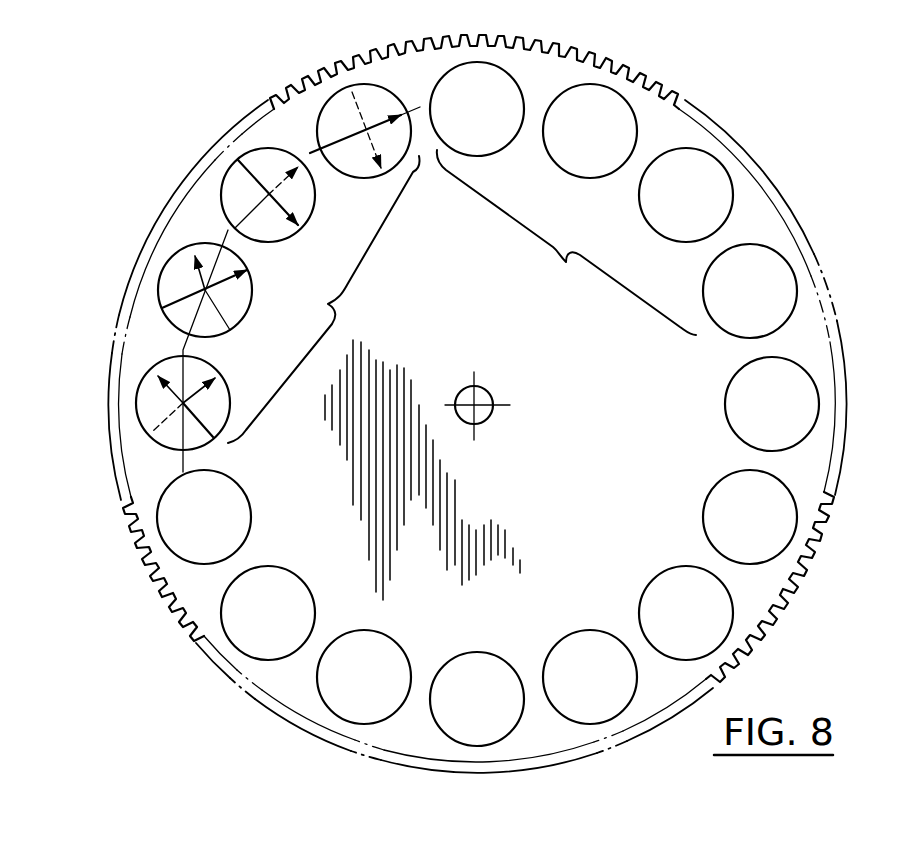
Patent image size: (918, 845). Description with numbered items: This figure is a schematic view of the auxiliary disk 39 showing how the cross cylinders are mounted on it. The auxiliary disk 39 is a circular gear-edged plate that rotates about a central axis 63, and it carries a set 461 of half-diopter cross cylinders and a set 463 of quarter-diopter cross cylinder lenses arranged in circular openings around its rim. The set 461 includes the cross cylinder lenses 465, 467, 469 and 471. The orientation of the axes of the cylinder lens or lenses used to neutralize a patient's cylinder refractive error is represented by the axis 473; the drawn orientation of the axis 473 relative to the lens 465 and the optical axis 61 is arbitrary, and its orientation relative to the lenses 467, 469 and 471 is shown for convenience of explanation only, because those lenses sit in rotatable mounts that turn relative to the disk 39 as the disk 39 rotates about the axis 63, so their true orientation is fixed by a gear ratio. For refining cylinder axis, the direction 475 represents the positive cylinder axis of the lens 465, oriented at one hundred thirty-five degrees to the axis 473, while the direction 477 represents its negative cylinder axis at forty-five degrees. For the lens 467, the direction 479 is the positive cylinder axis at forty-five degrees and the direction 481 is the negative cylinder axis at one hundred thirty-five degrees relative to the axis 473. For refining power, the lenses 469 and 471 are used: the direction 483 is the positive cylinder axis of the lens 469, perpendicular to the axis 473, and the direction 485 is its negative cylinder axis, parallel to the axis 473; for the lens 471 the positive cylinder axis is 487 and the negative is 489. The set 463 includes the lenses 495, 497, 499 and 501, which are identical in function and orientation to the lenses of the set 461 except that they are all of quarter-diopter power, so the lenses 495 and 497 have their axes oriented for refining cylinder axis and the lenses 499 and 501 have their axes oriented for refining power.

The auxiliary disk 39 is at (500, 502).
The axis 63 is at (478, 401).
The optical axis 61 is at (190, 402).
The set of 0.50 D cross cylinders 461 is at (422, 455).
The set of 0.25 D cross cylinder lenses 463 is at (566, 242).
The cross cylinder lens 465 is at (157, 368).
The cross cylinder lens 467 is at (222, 313).
The cross cylinder lens 469 is at (272, 231).
The cross cylinder lens 471 is at (355, 157).
The axis 473 is at (418, 104).
The positive cylinder axis direction 475 is at (167, 397).
The negative cylinder axis direction 477 is at (166, 430).
The positive cylinder axis direction 479 is at (222, 287).
The negative cylinder axis direction 481 is at (199, 280).
The positive cylinder axis direction 483 is at (296, 204).
The negative cylinder axis direction 485 is at (267, 194).
The positive cylinder axis direction 487 is at (341, 141).
The negative cylinder axis direction 489 is at (352, 90).
The cross cylinder lens 495 is at (493, 133).
The cross cylinder lens 497 is at (575, 163).
The cross cylinder lens 499 is at (643, 201).
The cross cylinder lens 501 is at (711, 286).